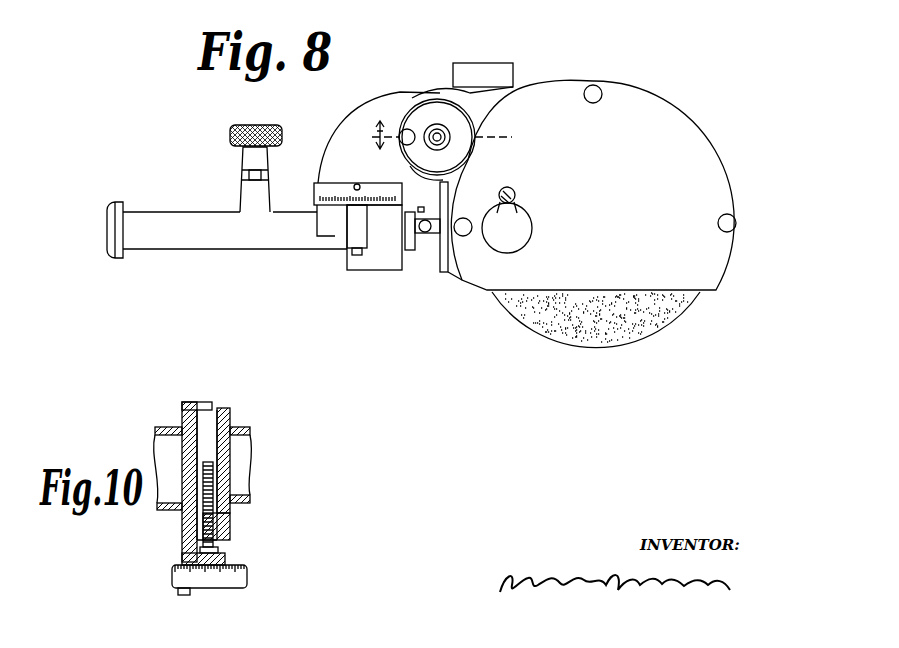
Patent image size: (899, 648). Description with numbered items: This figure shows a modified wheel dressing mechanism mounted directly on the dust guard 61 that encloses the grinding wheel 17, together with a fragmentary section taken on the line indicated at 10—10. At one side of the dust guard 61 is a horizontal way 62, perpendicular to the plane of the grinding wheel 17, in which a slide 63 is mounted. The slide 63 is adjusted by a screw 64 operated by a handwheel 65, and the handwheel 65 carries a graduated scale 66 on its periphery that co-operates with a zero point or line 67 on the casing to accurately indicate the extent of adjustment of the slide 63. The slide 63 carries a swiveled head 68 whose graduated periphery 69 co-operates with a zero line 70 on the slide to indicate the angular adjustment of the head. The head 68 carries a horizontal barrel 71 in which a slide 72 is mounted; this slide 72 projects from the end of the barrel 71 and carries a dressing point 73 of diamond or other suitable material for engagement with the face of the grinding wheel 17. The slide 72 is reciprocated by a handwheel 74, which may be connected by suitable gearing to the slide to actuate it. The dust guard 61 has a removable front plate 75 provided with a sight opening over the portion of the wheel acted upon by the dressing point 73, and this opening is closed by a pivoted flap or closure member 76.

In FIG. 8, the section line 10— 10 is at (438, 137).
In FIG. 8, the grinding wheel 17 is at (540, 313).
In FIG. 8, the dust guard 61 is at (523, 85).
In FIG. 8, the horizontal way 62 is at (447, 96).
In FIG. 10, the horizontal way 62 is at (234, 414).
In FIG. 8, the slide 63 is at (407, 100).
In FIG. 10, the slide 63 is at (193, 408).
In FIG. 10, the screw 64 is at (229, 532).
In FIG. 8, the handwheel 65 is at (456, 116).
In FIG. 10, the handwheel 65 is at (233, 582).
In FIG. 10, the graduated scale 66 is at (246, 568).
In FIG. 10, the zero point or line 67 is at (169, 566).
In FIG. 8, the swiveled head 68 is at (382, 258).
In FIG. 8, the graduated periphery 69 is at (345, 210).
In FIG. 8, the zero line 70 is at (366, 182).
In FIG. 8, the horizontal barrel 71 is at (289, 250).
In FIG. 8, the slide 72 is at (425, 233).
In FIG. 8, the dressing point 73 is at (444, 252).
In FIG. 8, the handwheel 74 is at (230, 135).
In FIG. 8, the removable front plate 75 is at (672, 128).
In FIG. 8, the pivoted flap or closure member 76 is at (520, 229).